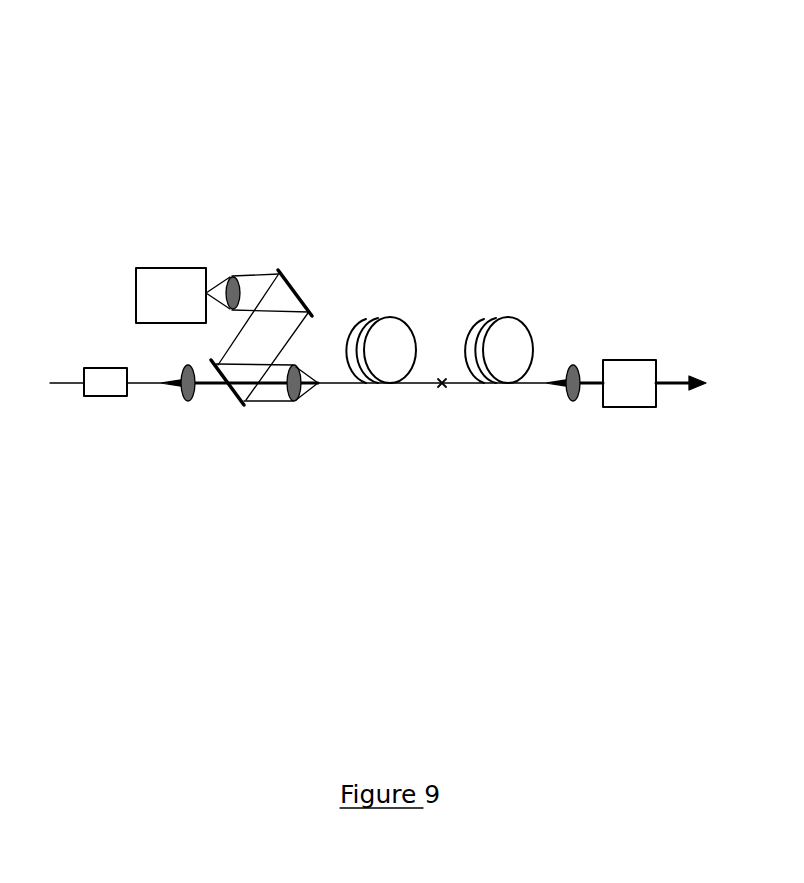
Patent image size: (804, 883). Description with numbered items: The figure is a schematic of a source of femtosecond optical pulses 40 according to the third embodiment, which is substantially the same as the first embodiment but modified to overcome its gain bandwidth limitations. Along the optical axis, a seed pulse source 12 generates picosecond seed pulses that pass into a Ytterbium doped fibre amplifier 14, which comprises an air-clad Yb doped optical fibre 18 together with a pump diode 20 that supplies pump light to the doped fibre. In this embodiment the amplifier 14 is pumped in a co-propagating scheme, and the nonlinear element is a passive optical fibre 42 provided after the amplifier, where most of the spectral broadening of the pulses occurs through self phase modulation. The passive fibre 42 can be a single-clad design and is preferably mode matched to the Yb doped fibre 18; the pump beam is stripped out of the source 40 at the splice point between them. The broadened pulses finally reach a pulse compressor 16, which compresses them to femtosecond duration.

The source of fs optical pulses 40 is at (418, 87).
The seed pulse source 12 is at (99, 397).
The Ytterbium doped fibre amplifier 14 is at (330, 427).
The pulse compressor 16 is at (630, 392).
The Yb doped optical fibre 18 is at (392, 318).
The pump diode 20 is at (161, 275).
The passive optical fibre 42 is at (513, 317).